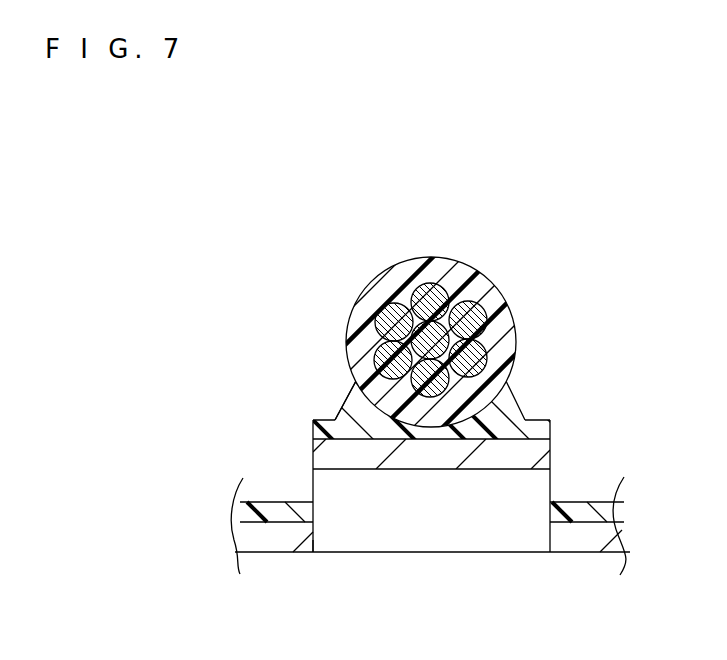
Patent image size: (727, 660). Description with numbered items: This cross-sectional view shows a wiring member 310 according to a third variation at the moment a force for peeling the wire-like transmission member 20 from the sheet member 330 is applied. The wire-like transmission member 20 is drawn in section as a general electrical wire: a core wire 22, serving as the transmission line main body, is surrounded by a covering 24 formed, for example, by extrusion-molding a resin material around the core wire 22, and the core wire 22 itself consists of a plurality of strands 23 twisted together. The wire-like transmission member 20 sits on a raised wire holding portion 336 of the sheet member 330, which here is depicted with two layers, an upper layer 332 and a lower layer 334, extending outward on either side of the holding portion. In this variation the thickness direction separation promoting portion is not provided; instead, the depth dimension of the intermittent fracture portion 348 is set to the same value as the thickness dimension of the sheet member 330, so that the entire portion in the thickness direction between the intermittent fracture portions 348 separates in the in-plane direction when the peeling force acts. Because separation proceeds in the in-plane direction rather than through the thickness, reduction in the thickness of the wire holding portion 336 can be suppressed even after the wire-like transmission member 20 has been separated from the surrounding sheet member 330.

The wiring member 310 is at (440, 369).
The wire-like transmission member 20 is at (440, 292).
The covering 24 is at (423, 273).
The core wire 22 is at (438, 290).
The strands 23 is at (503, 218).
The sheet member 330 is at (430, 480).
The first layer 332 is at (537, 428).
The second layer 334 is at (547, 453).
The wire holding portion 336 is at (345, 392).
The intermittent fracture portion 348 is at (313, 533).